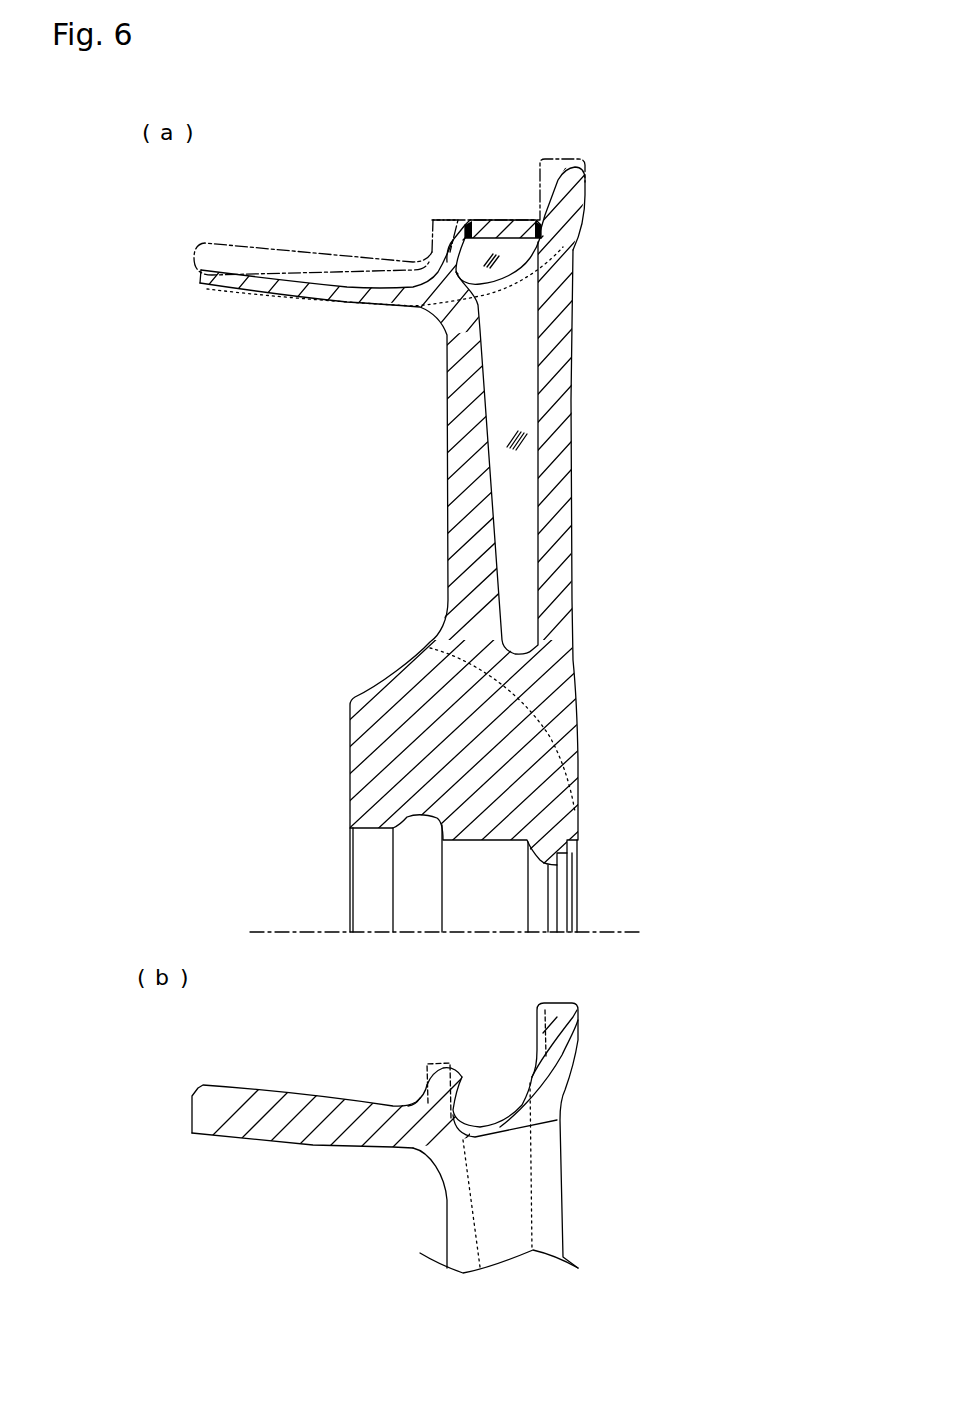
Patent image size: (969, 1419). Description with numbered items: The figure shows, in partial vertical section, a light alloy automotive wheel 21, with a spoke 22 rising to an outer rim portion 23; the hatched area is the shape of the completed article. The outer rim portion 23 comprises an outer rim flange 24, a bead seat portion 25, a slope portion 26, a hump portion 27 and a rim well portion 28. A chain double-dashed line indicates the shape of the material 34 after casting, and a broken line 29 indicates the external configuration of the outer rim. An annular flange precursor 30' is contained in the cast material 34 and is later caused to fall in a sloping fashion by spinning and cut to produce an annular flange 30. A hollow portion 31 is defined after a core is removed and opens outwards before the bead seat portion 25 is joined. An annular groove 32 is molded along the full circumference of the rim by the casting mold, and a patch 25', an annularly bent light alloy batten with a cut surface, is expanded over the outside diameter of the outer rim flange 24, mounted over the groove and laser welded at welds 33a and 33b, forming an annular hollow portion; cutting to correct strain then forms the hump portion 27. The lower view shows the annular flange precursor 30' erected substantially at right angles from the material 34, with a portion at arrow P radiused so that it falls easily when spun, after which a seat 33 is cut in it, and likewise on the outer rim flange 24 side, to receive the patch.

The light alloy automotive wheel 21 is at (425, 679).
The spoke 22 is at (575, 558).
The outer rim portion 23 is at (508, 191).
The outer rim flange 24 is at (573, 200).
The bead seat portion 25 is at (503, 181).
The patch 25' is at (508, 168).
The slope portion 26 is at (458, 273).
The hump portion 27 is at (482, 215).
The rim well portion 28 is at (333, 290).
The external configuration of outer rim 29 is at (494, 296).
The annular flange 30 is at (426, 654).
The annular flange precursor 30' is at (409, 656).
The hollow portion 31 is at (527, 437).
The annular groove 32 is at (500, 263).
The seat 33 is at (530, 1071).
The weld 33a is at (545, 238).
The weld 33b is at (464, 232).
The material 34 is at (226, 253).
The radiused portion P is at (411, 1096).